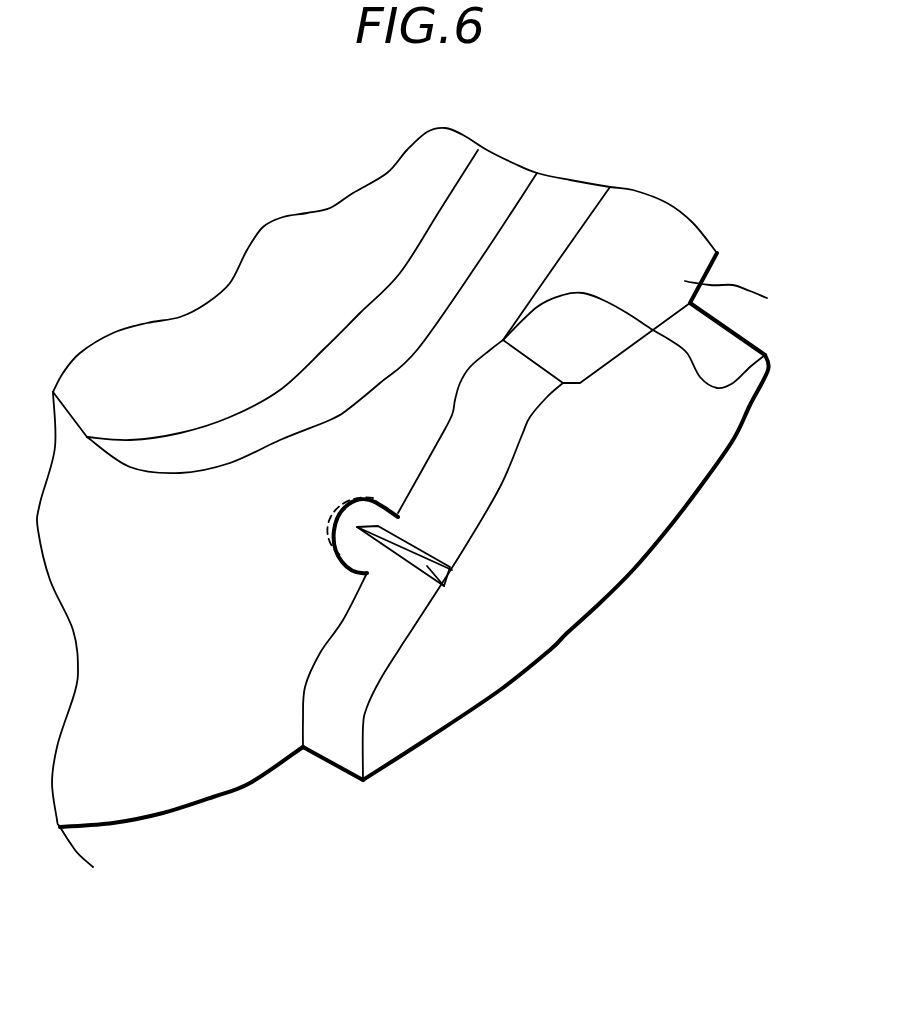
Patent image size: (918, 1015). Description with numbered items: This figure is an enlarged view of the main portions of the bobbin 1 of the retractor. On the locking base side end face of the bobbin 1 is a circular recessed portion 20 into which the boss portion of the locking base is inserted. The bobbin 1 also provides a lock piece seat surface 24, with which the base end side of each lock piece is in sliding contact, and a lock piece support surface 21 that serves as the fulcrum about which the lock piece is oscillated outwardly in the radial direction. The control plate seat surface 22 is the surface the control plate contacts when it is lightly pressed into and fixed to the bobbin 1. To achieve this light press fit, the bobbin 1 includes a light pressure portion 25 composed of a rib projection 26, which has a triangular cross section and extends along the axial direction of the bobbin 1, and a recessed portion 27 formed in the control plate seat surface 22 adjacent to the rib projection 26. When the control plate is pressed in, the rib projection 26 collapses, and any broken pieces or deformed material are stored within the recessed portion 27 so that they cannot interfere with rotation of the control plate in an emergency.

The bobbin 1 is at (548, 655).
The circular recessed portion 20 is at (153, 407).
The lock piece support surface 21 is at (603, 327).
The control plate seat surface 22 is at (167, 682).
The lock piece seat surface 24 is at (707, 287).
The light pressure portion 25 is at (393, 580).
The rib projection 26 is at (410, 547).
The recessed portion 27 is at (367, 517).